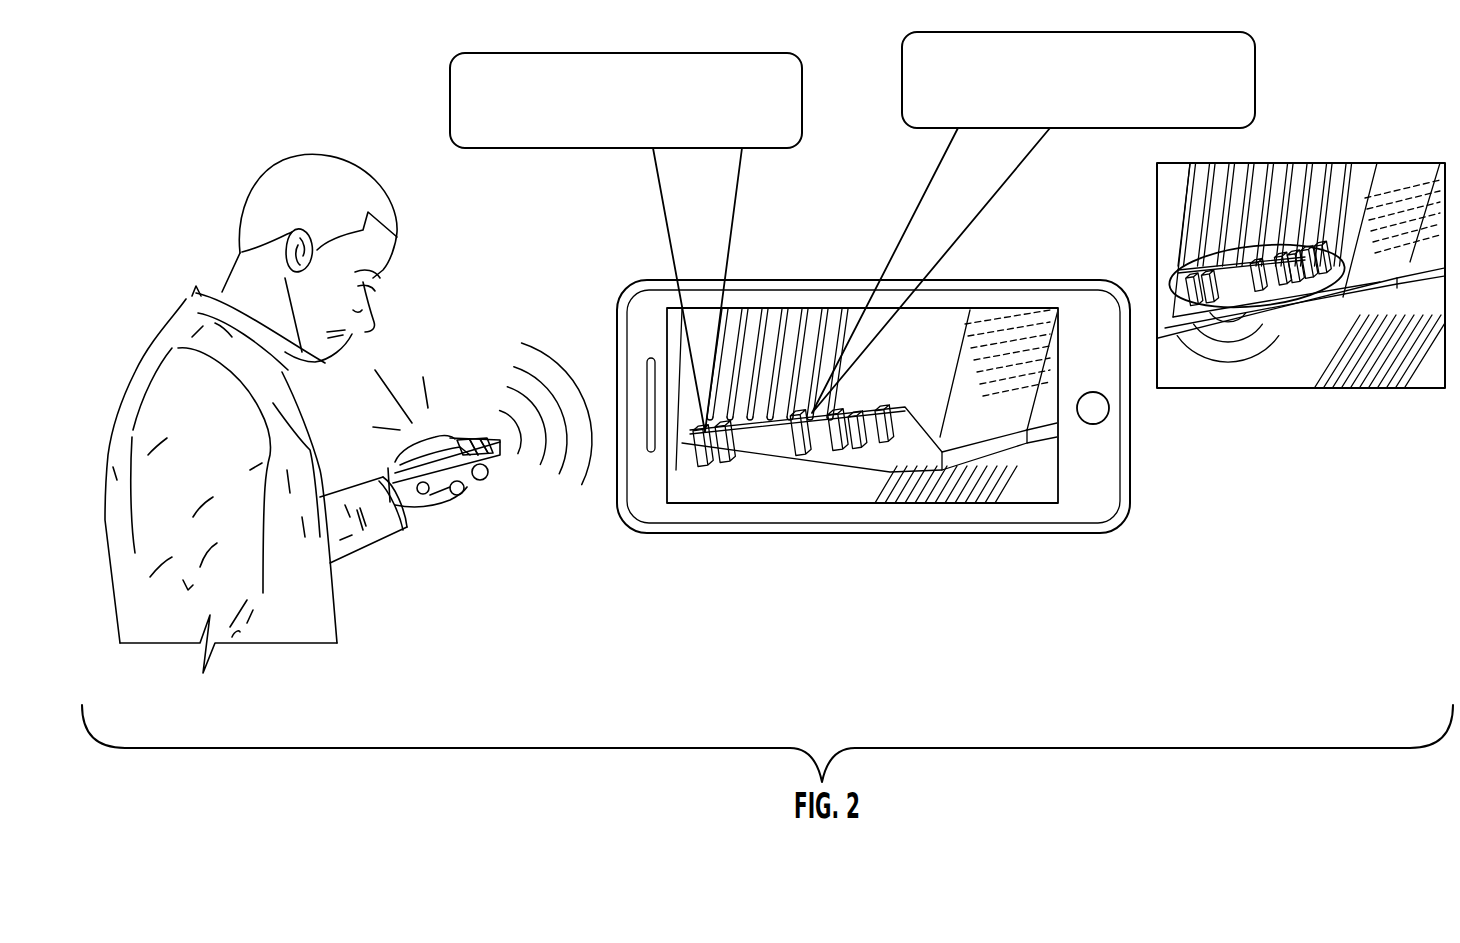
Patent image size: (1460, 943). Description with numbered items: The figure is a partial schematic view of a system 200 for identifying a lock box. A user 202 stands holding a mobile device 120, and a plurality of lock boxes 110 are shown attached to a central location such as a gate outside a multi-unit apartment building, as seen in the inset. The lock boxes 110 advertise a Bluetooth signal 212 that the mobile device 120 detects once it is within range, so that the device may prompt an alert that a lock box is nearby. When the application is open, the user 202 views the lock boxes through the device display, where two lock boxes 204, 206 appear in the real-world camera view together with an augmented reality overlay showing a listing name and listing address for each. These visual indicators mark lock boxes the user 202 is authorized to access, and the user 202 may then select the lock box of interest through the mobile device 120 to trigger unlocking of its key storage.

The environment 200 is at (400, 72).
The user 202 is at (203, 297).
The mobile device 120 is at (445, 505).
The lock box 204 is at (463, 440).
The lock box 206 is at (483, 443).
The lock boxes 110 is at (1172, 274).
The Bluetooth signal 212 is at (1257, 363).